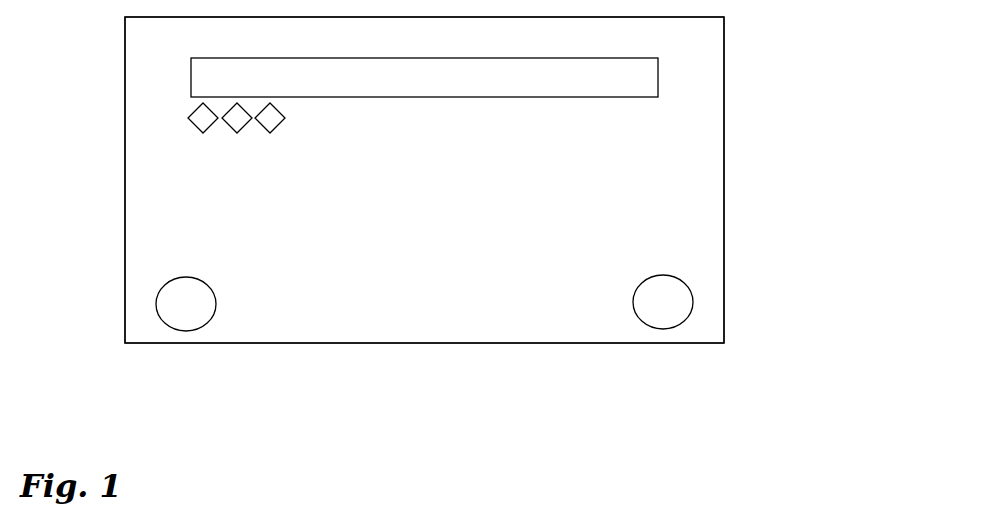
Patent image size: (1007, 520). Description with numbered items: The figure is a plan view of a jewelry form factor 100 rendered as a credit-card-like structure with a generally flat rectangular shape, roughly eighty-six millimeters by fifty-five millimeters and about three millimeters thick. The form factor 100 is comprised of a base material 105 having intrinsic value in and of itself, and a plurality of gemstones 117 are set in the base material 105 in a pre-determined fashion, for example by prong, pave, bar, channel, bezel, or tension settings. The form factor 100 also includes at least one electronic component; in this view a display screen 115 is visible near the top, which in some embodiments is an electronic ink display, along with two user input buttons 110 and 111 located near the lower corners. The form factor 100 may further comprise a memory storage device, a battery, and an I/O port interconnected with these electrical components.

The jewelry form factor 100 is at (828, 158).
The base material 105 is at (463, 252).
The user input button 110 is at (672, 310).
The user input button 111 is at (194, 313).
The display screen 115 is at (573, 92).
The gemstones 117 is at (245, 146).